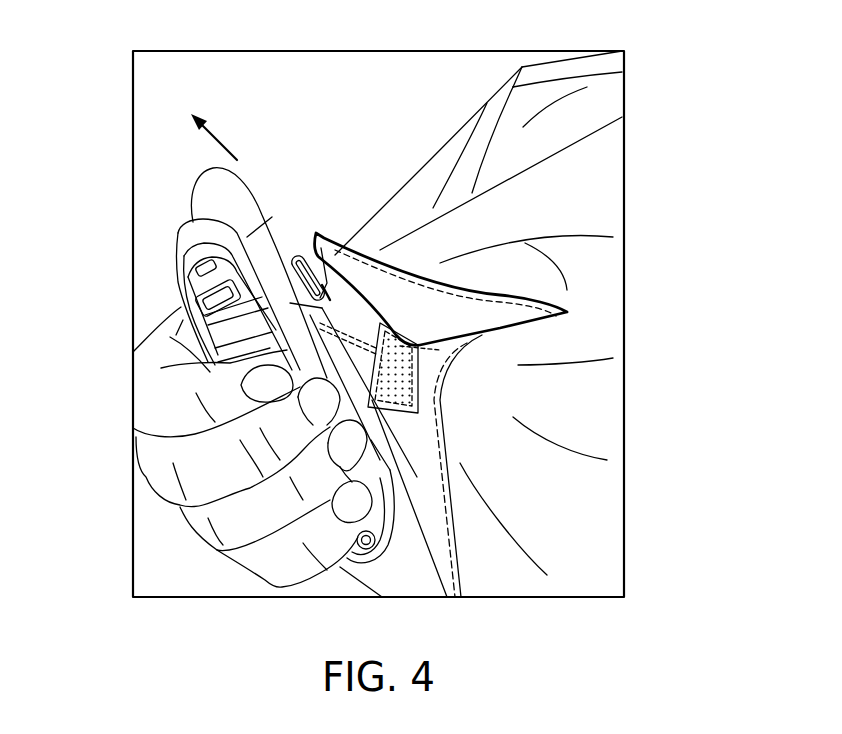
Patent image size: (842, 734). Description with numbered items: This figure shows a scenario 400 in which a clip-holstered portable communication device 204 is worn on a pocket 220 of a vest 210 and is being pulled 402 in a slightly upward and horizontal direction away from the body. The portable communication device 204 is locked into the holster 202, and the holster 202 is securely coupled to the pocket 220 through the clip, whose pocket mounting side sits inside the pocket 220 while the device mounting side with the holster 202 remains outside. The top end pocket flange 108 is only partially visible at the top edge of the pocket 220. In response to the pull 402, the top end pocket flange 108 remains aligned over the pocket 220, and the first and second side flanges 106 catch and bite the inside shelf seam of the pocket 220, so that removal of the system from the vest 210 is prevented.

The scenario 400 is at (662, 44).
The pull 402 is at (223, 147).
The vest 210 is at (466, 137).
The top end pocket flange 108 is at (317, 233).
The first and second side flanges 106 is at (344, 240).
The holster 202 is at (181, 240).
The portable communication device 204 is at (178, 284).
The pocket 220 is at (432, 433).